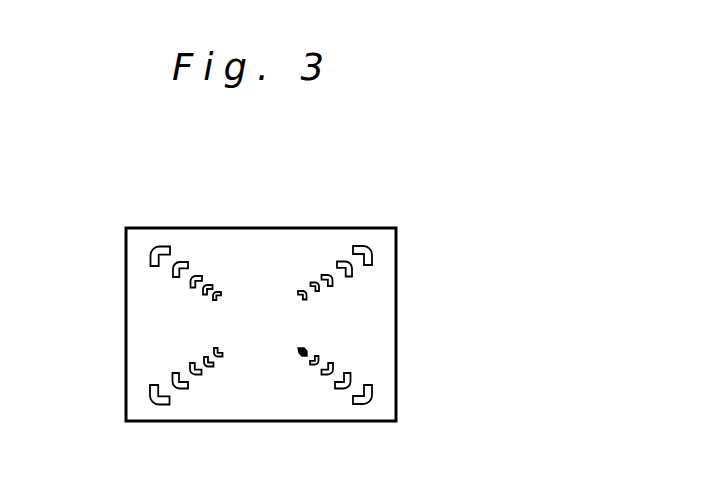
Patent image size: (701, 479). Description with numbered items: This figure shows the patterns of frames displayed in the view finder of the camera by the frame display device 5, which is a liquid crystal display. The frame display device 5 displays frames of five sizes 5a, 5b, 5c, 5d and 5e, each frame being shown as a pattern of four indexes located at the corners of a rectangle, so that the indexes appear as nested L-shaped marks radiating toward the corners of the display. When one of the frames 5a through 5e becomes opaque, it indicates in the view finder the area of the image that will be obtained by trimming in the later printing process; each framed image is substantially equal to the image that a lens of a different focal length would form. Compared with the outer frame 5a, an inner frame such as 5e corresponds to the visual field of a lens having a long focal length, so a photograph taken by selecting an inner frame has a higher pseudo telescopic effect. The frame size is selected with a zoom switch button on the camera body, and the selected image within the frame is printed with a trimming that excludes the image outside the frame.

The frame display device 5 is at (277, 237).
The frame 5a is at (372, 254).
The frame 5b is at (352, 271).
The frame 5c is at (333, 283).
The frame 5d is at (318, 289).
The frame 5e is at (307, 296).